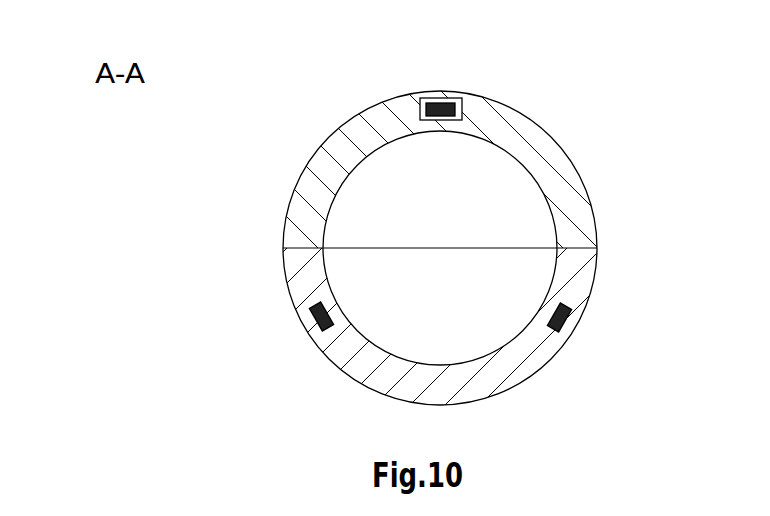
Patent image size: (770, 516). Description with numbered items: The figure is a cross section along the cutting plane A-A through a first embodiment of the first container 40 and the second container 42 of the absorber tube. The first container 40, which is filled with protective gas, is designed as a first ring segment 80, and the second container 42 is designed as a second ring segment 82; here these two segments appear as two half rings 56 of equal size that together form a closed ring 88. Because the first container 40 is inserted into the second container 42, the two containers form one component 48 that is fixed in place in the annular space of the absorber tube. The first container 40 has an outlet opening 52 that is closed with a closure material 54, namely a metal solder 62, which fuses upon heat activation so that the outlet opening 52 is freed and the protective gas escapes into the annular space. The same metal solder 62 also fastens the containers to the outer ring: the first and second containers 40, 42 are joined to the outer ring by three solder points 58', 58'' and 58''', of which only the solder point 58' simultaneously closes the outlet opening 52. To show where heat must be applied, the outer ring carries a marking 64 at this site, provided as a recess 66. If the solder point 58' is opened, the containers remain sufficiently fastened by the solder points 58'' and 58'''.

The first container 40 is at (437, 170).
The second container 42 is at (433, 332).
The component 48 is at (437, 230).
The outlet opening 52 is at (470, 73).
The closure material 54 is at (470, 73).
The half rings 56 is at (437, 170).
The solder point 58' is at (470, 73).
The solder point 58'' is at (245, 329).
The solder point 58''' is at (657, 313).
The metal solder 62 is at (458, 89).
The marking 64 is at (365, 89).
The recess 66 is at (420, 104).
The first ring segment 80 is at (550, 140).
The second ring segment 82 is at (532, 366).
The closed ring 88 is at (233, 168).